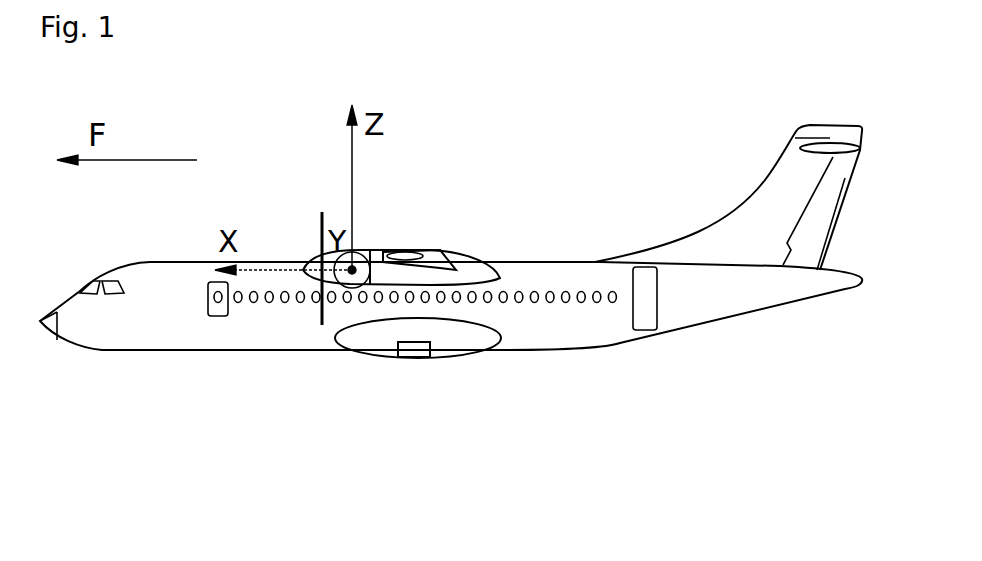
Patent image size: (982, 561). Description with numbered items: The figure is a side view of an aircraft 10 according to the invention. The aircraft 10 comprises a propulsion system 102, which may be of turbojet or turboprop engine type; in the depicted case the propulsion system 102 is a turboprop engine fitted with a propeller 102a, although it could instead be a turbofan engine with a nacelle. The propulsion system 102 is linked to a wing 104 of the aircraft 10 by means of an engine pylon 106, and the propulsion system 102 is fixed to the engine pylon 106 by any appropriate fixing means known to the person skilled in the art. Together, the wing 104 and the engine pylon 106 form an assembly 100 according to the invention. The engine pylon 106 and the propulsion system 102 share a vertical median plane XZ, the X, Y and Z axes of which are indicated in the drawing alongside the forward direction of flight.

The aircraft 10 is at (538, 217).
The assembly 100 is at (288, 413).
The propulsion system 102 is at (352, 290).
The propeller 102a is at (320, 212).
The wing 104 is at (417, 247).
The engine pylon 106 is at (427, 297).